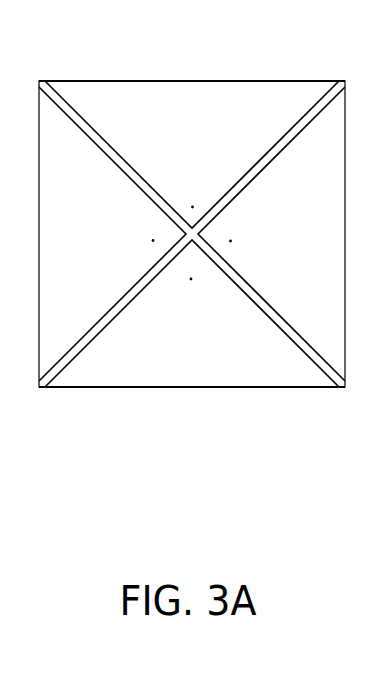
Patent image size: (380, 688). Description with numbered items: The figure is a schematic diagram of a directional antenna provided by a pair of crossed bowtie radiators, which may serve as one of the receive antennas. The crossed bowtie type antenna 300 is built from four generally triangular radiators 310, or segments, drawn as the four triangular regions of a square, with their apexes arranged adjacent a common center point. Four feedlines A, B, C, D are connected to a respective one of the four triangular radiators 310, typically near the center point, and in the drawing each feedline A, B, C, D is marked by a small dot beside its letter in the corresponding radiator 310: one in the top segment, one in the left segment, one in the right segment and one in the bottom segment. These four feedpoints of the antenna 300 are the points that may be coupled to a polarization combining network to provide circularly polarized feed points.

The crossed bowtie type antenna 300 is at (72, 42).
The triangular radiator 310 is at (172, 129).
The feedline A is at (138, 235).
The feedline B is at (193, 188).
The feedline C is at (244, 236).
The feedline D is at (191, 297).